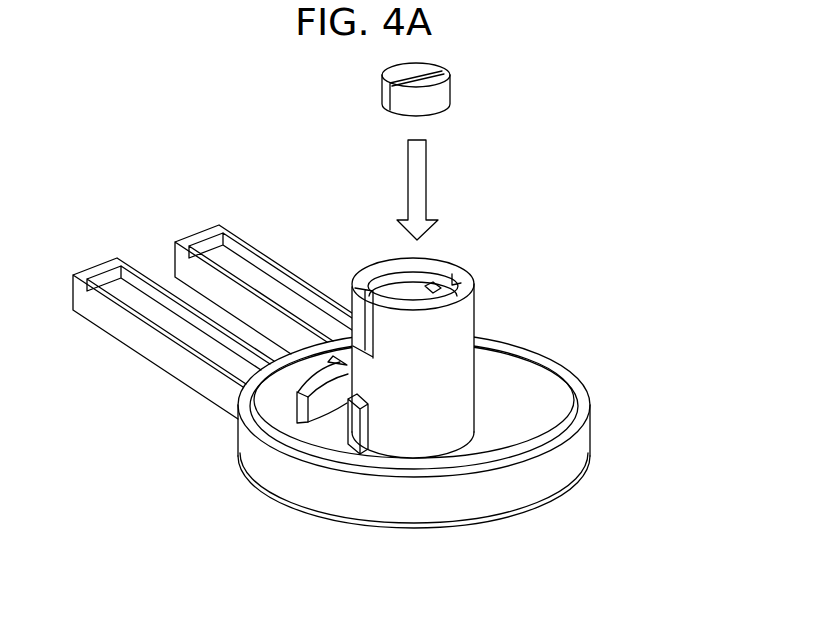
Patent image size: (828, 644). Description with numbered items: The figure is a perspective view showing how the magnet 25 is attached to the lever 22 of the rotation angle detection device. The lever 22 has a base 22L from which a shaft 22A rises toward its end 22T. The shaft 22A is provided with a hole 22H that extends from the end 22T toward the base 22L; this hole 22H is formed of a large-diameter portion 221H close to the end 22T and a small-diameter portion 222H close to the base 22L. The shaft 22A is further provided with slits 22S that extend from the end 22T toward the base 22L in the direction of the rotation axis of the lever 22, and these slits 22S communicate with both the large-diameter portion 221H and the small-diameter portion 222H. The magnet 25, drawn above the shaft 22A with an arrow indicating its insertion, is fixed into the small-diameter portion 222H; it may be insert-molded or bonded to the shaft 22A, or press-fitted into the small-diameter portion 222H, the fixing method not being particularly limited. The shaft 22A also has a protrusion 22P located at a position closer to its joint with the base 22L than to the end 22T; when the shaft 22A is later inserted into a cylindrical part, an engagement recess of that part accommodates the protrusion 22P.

The magnet 25 is at (442, 102).
The lever 22 is at (360, 355).
The hole 22H is at (490, 209).
The large-diameter portion 221H is at (418, 268).
The small-diameter portion 222H is at (436, 290).
The slits 22S is at (458, 277).
The end 22T is at (370, 268).
The shaft 22A is at (450, 343).
The base 22L is at (293, 505).
The protrusion 22P is at (357, 440).